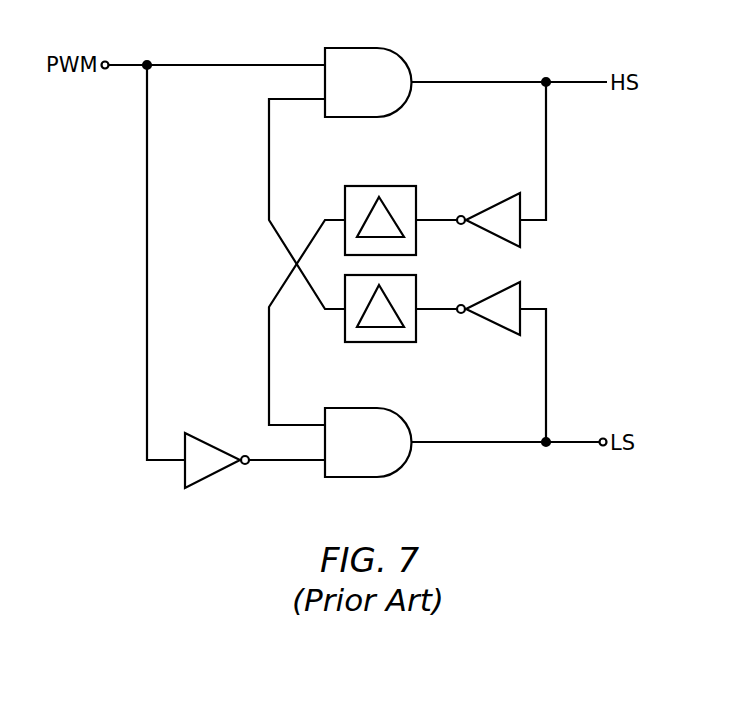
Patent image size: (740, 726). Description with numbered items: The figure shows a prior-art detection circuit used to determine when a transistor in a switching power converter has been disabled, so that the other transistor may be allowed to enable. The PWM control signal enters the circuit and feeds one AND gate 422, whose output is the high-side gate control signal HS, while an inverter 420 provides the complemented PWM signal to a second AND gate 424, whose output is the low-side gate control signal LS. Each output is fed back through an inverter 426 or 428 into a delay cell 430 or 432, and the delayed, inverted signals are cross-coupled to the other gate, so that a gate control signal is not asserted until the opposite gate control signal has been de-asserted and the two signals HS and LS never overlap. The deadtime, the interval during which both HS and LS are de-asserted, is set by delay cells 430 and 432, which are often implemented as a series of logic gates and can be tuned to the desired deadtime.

The inverter 420 is at (217, 444).
The AND gate (high-side) 422 is at (357, 48).
The AND gate (low-side) 424 is at (358, 478).
The inverter (high-side feedback) 426 is at (492, 203).
The inverter (low-side feedback) 428 is at (492, 292).
The delay cell 430 is at (417, 193).
The delay cell 432 is at (417, 287).